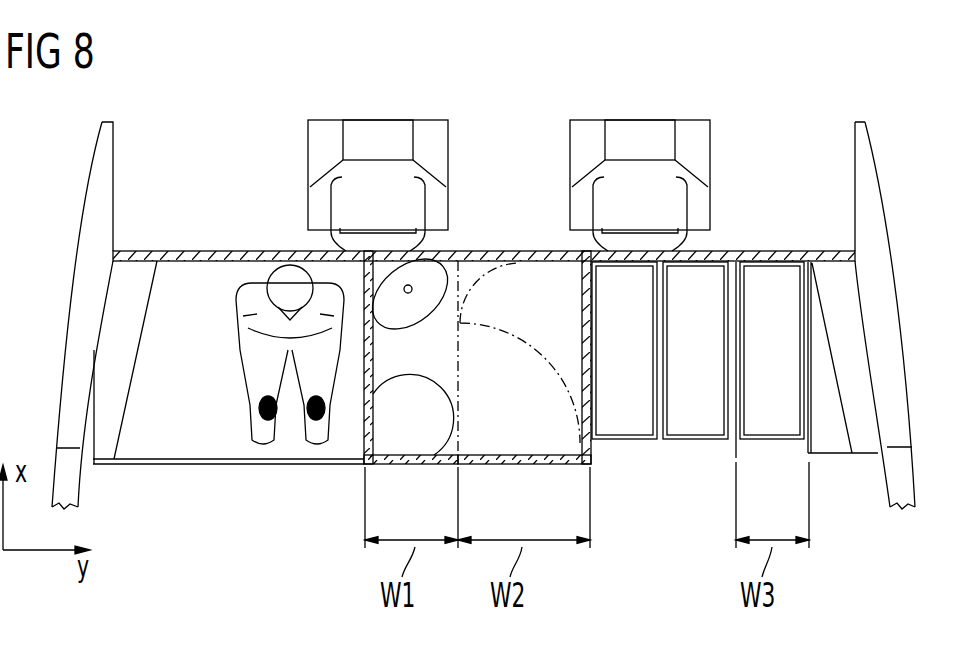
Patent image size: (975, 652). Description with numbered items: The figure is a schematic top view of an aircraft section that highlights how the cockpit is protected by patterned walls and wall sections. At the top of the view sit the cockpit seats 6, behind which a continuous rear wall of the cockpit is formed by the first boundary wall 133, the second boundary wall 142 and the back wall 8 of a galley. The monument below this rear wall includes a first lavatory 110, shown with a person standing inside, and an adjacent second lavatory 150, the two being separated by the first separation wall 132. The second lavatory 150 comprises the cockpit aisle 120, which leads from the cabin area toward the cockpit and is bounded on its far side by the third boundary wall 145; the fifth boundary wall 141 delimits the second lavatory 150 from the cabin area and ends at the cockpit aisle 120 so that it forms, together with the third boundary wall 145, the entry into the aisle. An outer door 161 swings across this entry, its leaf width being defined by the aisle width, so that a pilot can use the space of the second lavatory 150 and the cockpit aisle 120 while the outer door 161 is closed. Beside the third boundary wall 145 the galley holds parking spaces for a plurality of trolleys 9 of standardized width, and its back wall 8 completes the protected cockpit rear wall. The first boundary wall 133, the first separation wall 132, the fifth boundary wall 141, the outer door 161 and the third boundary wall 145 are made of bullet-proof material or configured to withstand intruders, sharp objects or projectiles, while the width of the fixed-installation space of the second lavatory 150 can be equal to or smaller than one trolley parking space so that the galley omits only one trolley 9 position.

The cockpit seat 6 is at (333, 132).
The back wall 8 is at (741, 251).
The trolley 9 is at (640, 440).
The first lavatory 110 is at (192, 495).
The cockpit aisle 120 is at (540, 318).
The first separation wall 132 is at (365, 420).
The first boundary wall 133 is at (200, 251).
The fifth boundary wall 141 is at (418, 465).
The second boundary wall 142 is at (447, 251).
The third boundary wall 145 is at (590, 446).
The second lavatory 150 is at (511, 222).
The outer door 161 is at (525, 465).